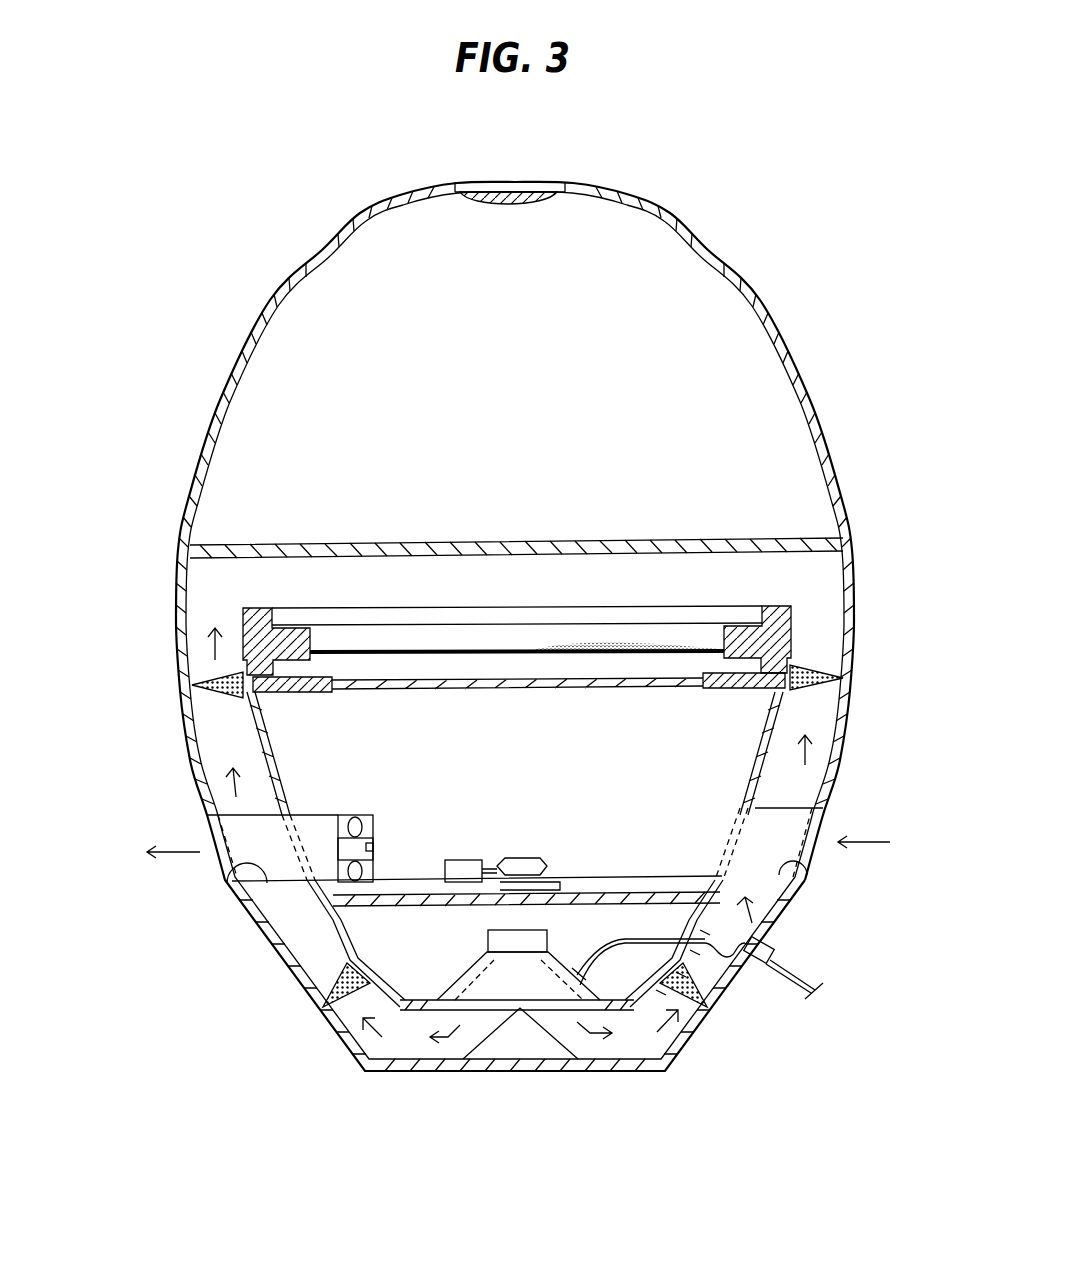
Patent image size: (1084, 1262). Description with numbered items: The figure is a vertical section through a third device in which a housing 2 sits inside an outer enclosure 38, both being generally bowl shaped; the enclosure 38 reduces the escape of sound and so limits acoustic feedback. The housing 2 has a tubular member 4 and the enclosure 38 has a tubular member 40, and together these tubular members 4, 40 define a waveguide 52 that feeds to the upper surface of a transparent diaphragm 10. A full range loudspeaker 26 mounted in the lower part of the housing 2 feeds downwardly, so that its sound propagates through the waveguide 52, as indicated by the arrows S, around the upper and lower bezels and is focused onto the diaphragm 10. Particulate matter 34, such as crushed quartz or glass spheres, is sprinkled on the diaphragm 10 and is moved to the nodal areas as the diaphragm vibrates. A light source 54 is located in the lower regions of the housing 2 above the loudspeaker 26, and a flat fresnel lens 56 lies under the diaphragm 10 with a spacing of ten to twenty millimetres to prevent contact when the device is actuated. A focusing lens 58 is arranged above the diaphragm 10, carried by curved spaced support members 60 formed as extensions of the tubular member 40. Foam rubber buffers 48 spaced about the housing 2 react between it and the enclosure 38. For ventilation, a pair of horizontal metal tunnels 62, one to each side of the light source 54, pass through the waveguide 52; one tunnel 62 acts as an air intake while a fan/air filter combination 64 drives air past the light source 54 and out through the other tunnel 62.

The housing 2 is at (237, 752).
The tubular member 4 is at (263, 753).
The diaphragm 10 is at (417, 652).
The loudspeaker 26 is at (465, 975).
The particulate matter 34 is at (608, 645).
The outer enclosure 38 is at (168, 511).
The tubular member 40 is at (184, 603).
The foam rubber buffers 48 is at (330, 1013).
The waveguide 52 is at (322, 970).
The light source 54 is at (547, 867).
The fresnel lens 56 is at (547, 683).
The focusing lens 58 is at (510, 202).
The support members 60 is at (300, 277).
The tunnels 62 is at (228, 880).
The fan/air filter combination 64 is at (373, 830).
The arrows S is at (237, 783).